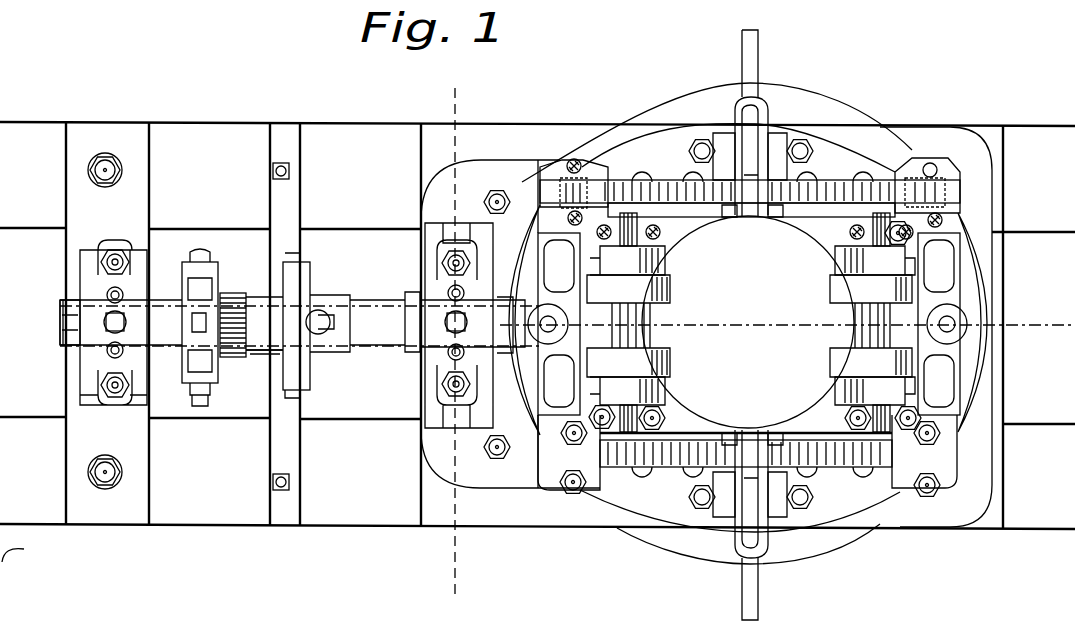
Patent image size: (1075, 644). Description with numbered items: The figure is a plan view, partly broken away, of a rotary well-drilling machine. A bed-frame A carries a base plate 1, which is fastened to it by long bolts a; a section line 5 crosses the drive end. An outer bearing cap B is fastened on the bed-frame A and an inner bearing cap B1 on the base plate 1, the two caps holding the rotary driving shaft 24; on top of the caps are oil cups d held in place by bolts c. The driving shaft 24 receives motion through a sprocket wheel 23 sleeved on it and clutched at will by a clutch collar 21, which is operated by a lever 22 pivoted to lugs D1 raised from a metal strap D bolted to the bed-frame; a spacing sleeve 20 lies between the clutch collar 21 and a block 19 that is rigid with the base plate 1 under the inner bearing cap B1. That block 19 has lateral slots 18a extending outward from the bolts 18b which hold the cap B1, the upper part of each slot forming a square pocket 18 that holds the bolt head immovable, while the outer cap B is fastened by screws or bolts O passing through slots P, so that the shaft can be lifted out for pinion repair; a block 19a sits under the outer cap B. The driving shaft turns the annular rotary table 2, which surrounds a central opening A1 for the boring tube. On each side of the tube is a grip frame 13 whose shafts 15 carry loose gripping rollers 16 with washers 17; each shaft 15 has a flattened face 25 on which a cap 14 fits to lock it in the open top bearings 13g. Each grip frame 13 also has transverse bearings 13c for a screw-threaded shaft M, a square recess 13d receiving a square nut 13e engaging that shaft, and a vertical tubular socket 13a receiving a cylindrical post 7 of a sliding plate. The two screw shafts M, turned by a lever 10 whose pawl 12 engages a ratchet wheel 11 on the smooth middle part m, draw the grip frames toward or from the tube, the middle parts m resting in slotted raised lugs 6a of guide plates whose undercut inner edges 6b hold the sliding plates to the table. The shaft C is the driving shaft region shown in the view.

The bed-frame A is at (170, 170).
The central opening A1 is at (787, 322).
The outer bearing cap B is at (128, 250).
The inner bearing cap B1 is at (425, 255).
The shaft C is at (300, 312).
The metal strap D is at (282, 326).
The lugs D1 is at (262, 268).
The screw-threaded shaft M is at (806, 174).
The smooth middle part m is at (746, 323).
The screws or bolts O is at (105, 262).
The slots P is at (112, 248).
The long bolts a is at (105, 163).
The bolts c is at (125, 295).
The oil cups d is at (452, 330).
The base plate 1 is at (706, 327).
The rotary table 2 is at (705, 560).
The section line 5 is at (455, 341).
The raised lugs 6a is at (742, 272).
The inner edge 6b is at (720, 258).
The cylindrical post 7 is at (546, 313).
The lever 10 is at (760, 52).
The ratchet wheel 11 is at (752, 218).
The pawl 12 is at (750, 147).
The grip frame 13 is at (572, 325).
The vertical tubular socket 13a is at (555, 343).
The bearings 13c is at (560, 190).
The square recess 13d is at (560, 172).
The square nut 13e is at (947, 177).
The open top bearings 13g is at (660, 250).
The cap 14 is at (747, 452).
The shaft 15 is at (645, 315).
The gripping rollers 16 is at (672, 282).
The washers 17 is at (665, 266).
The pocket 18 is at (452, 240).
The lateral slots 18a is at (492, 198).
The bolts 18b is at (450, 262).
The block 19 is at (437, 365).
The bearing base 19a is at (93, 397).
The spacing sleeve 20 is at (372, 300).
The clutch collar 21 is at (272, 355).
The lever 22 is at (300, 268).
The sprocket wheel 23 is at (223, 354).
The rotary driving shaft 24 is at (62, 322).
The flattened face 25 is at (672, 252).